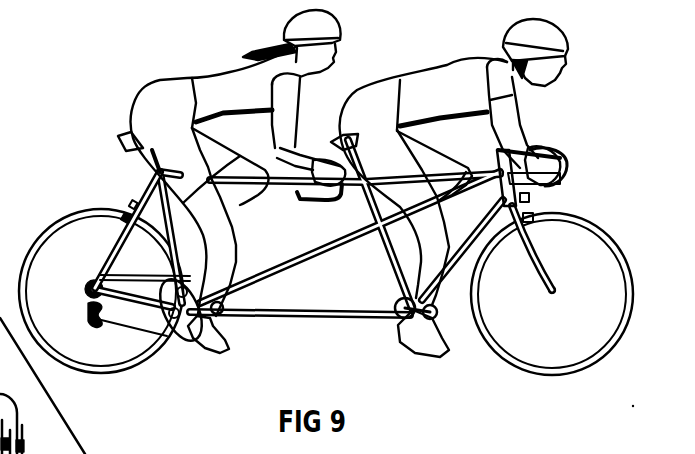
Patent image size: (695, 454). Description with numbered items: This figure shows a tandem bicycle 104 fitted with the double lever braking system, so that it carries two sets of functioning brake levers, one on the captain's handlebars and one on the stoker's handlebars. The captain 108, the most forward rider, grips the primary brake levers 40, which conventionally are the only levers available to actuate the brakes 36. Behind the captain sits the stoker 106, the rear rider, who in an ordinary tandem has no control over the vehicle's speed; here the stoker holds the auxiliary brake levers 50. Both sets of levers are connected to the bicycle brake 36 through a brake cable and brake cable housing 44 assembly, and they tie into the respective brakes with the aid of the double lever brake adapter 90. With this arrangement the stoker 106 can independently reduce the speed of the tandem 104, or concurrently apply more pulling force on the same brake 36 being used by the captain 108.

The tandem bicycle 104 is at (310, 333).
The stoker 106 is at (192, 78).
The captain 108 is at (420, 72).
The brake cable housing 44 is at (152, 178).
The double lever brake adapter 90 is at (132, 206).
The bicycle brake 36 is at (125, 223).
The auxiliary brake levers 50 is at (343, 190).
The brake levers 40 is at (556, 169).